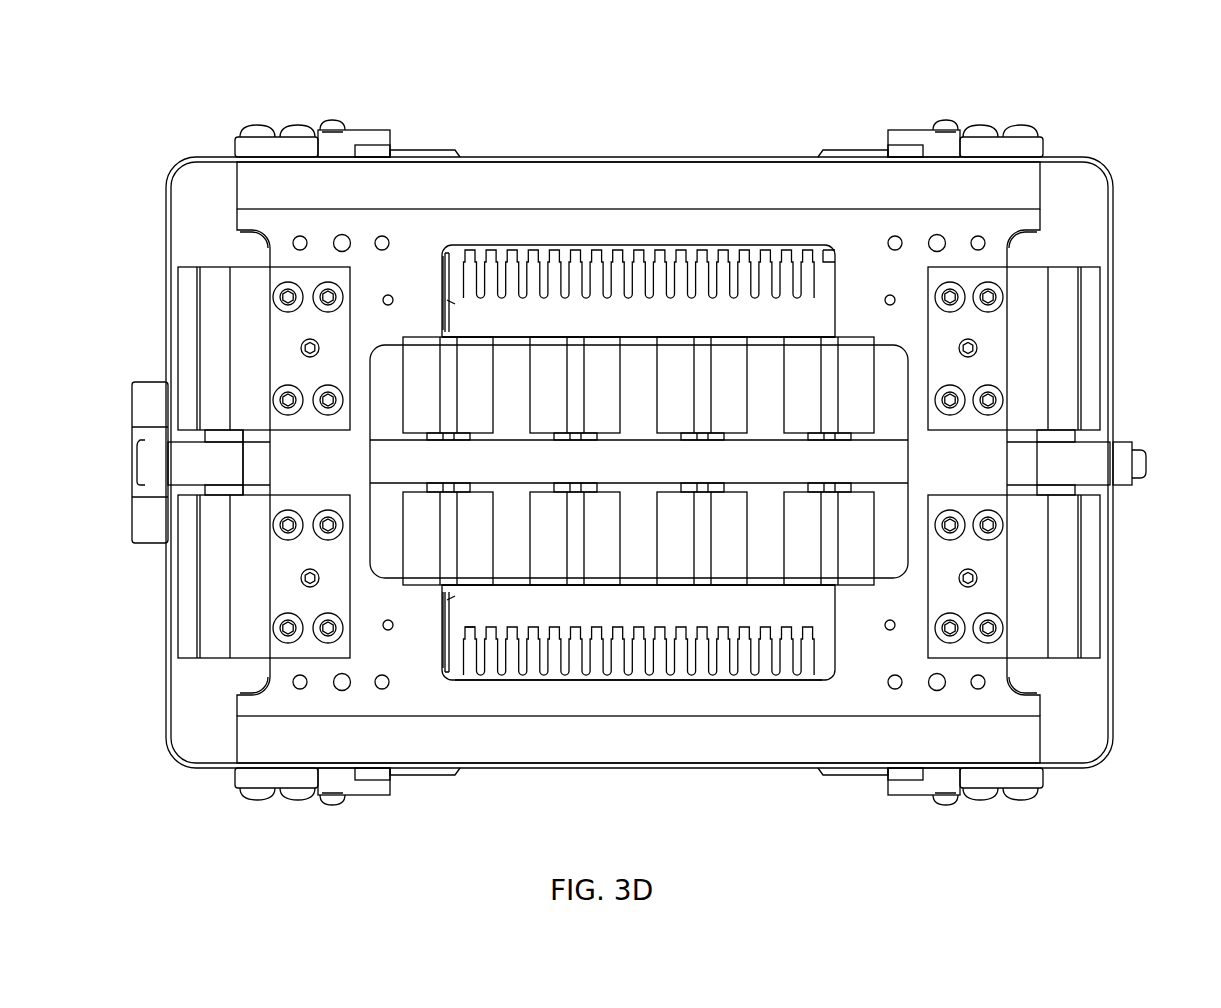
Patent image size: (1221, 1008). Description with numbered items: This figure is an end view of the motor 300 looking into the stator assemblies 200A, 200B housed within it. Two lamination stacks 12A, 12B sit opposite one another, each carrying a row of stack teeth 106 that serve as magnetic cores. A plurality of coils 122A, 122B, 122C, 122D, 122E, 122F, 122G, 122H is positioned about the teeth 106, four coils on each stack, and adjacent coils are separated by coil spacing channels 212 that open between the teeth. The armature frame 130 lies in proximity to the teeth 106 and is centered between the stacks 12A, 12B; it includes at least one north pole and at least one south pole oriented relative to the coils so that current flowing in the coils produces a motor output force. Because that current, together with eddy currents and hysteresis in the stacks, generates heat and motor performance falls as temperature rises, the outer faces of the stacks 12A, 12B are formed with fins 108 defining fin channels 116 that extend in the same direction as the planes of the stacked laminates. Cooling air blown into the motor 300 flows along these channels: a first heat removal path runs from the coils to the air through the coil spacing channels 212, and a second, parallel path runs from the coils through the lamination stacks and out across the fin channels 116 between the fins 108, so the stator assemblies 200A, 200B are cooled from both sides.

The motor 300 is at (1139, 110).
The coil spacing channels 212 is at (637, 358).
The stator assembly 200A is at (816, 320).
The stator assembly 200B is at (826, 600).
The lamination stack 12A is at (455, 300).
The lamination stack 12B is at (445, 594).
The stack tooth 106 is at (828, 357).
The armature frame 130 is at (877, 468).
The fins 108 is at (517, 668).
The fin channels 116 is at (715, 660).
The coil 122A is at (818, 388).
The coil 122B is at (692, 388).
The coil 122C is at (562, 388).
The coil 122D is at (437, 388).
The coil 122E is at (818, 534).
The coil 122F is at (687, 534).
The coil 122G is at (562, 534).
The coil 122H is at (438, 534).